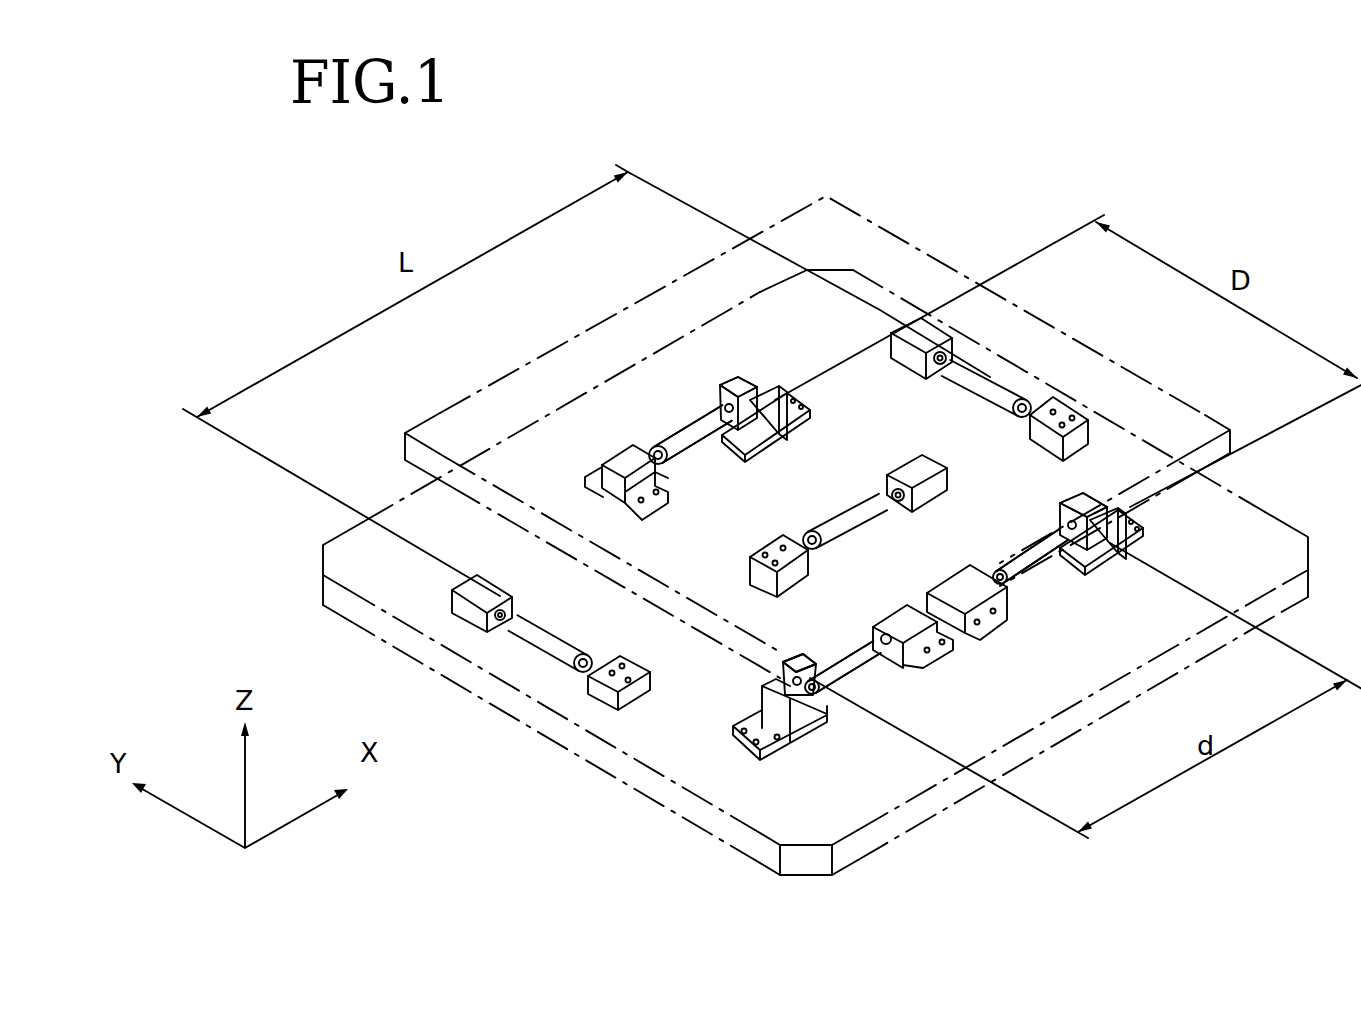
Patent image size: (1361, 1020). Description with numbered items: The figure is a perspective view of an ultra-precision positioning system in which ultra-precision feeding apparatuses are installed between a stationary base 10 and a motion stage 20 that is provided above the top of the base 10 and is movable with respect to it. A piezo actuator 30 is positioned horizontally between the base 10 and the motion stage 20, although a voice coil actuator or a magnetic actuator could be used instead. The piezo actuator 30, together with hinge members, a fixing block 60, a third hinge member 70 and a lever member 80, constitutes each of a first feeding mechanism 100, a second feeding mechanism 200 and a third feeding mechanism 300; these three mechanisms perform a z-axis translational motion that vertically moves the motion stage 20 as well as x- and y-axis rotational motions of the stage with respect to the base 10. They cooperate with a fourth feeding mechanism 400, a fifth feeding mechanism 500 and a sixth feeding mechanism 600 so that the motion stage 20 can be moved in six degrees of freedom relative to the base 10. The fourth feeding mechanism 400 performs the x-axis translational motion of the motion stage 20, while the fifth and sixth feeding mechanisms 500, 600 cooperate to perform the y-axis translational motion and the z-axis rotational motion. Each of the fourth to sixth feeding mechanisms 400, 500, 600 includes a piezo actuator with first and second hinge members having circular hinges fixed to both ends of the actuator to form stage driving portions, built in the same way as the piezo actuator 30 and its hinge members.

The base 10 is at (640, 797).
The motion stage 20 is at (893, 227).
The piezo actuator 30 is at (665, 440).
The fixing block 60 is at (620, 458).
The third hinge member 70 is at (730, 378).
The lever member 80 is at (752, 464).
The first feeding mechanism 100 is at (700, 408).
The second feeding mechanism 200 is at (887, 662).
The third feeding mechanism 300 is at (1054, 576).
The fourth feeding mechanism 400 is at (838, 506).
The fifth feeding mechanism 500 is at (545, 658).
The sixth feeding mechanism 600 is at (997, 366).